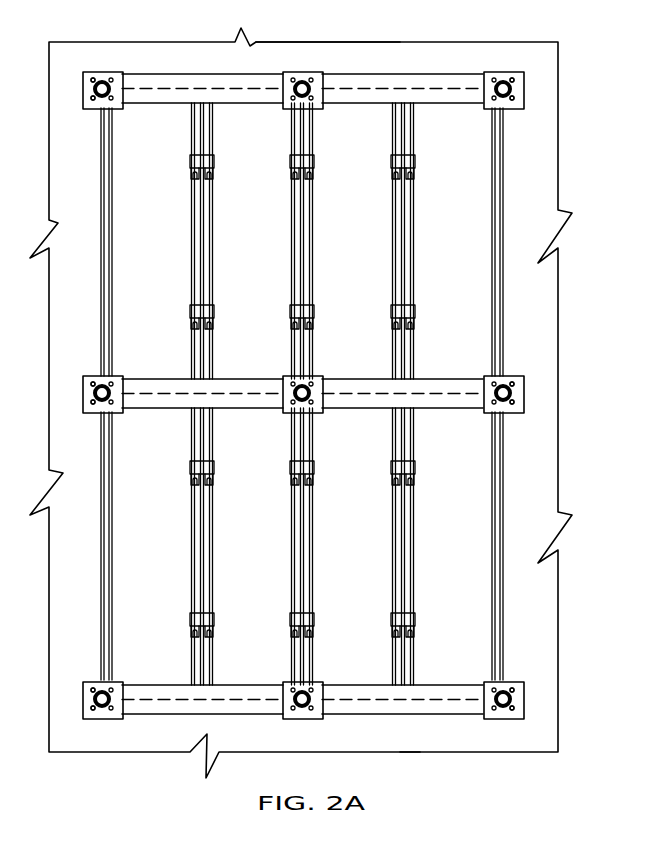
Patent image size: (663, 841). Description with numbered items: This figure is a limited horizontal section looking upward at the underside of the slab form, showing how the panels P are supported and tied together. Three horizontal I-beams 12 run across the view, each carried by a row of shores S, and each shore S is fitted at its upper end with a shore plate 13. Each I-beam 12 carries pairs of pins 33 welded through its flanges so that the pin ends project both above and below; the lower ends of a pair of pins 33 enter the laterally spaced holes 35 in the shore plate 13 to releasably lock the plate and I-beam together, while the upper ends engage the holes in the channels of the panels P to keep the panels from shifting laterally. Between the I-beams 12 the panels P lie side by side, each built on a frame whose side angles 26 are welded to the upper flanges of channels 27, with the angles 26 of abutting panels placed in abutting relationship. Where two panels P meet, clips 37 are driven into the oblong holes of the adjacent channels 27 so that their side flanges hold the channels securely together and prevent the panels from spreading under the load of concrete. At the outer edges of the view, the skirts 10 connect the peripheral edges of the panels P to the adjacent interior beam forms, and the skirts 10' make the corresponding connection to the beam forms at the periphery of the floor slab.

The skirt 10 is at (301, 403).
The skirt 10' is at (338, 397).
The I-beam 12 is at (181, 74).
The shore plate 13 is at (88, 73).
The side angle 26 is at (101, 235).
The channel 27 is at (113, 218).
The pin 33 is at (113, 79).
The hole 35 is at (91, 80).
The clip 37 is at (214, 164).
The panel P is at (139, 266).
The shore S is at (96, 89).